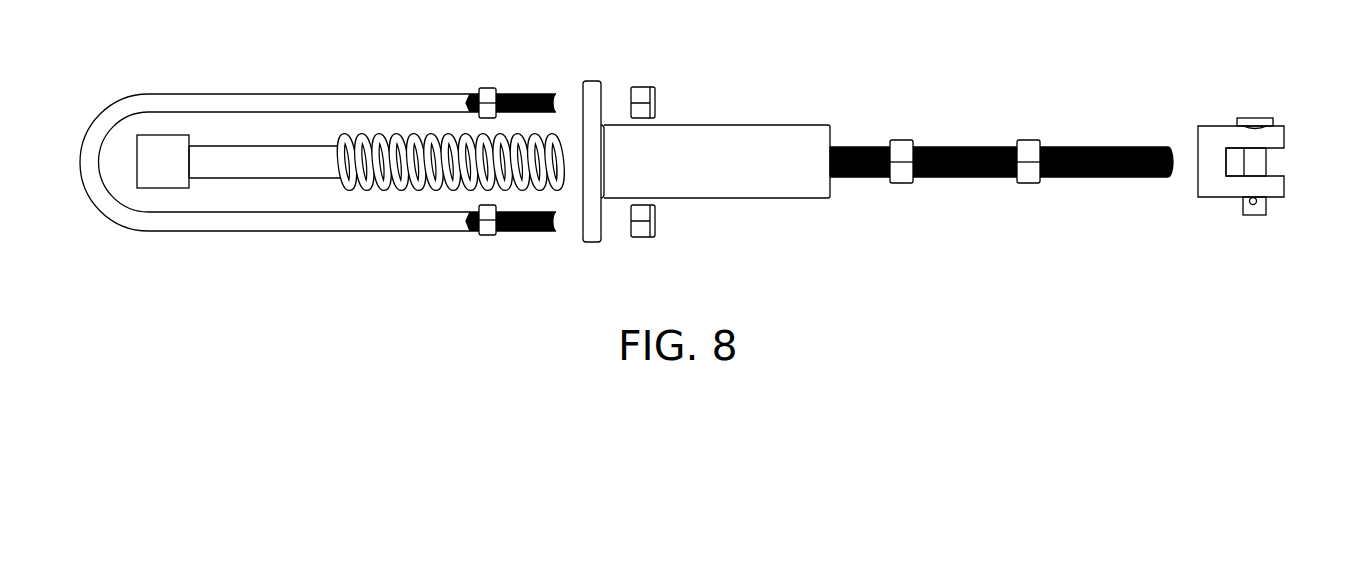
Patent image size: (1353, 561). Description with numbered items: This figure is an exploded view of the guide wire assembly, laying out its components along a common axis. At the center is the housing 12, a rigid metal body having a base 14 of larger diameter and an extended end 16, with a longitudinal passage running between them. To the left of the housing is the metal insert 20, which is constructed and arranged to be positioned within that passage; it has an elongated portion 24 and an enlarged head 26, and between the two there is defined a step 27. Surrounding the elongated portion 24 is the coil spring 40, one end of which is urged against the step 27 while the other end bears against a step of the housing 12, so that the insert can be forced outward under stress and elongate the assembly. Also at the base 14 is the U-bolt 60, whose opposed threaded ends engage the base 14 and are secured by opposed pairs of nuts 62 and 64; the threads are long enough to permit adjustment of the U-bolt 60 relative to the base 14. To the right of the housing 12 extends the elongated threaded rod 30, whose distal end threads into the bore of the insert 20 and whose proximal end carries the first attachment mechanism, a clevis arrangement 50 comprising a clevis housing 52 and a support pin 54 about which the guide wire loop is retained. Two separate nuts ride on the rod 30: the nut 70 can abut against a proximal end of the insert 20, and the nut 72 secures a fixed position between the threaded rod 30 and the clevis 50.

The housing 12 is at (706, 143).
The base end 14 is at (591, 81).
The extended end 16 is at (750, 190).
The metal insert 20 is at (321, 151).
The elongated portion 24 is at (253, 148).
The enlarged head 26 is at (160, 137).
The step 27 is at (190, 140).
The threaded rod 30 is at (1001, 142).
The coil spring 40 is at (402, 138).
The clevis arrangement 50 is at (1239, 138).
The clevis housing 52 is at (1215, 192).
The support pin 54 is at (1258, 157).
The U-bolt 60 is at (307, 94).
The nuts 62 is at (643, 88).
The nuts 64 is at (487, 88).
The nut 70 is at (900, 182).
The nut 72 is at (1028, 182).